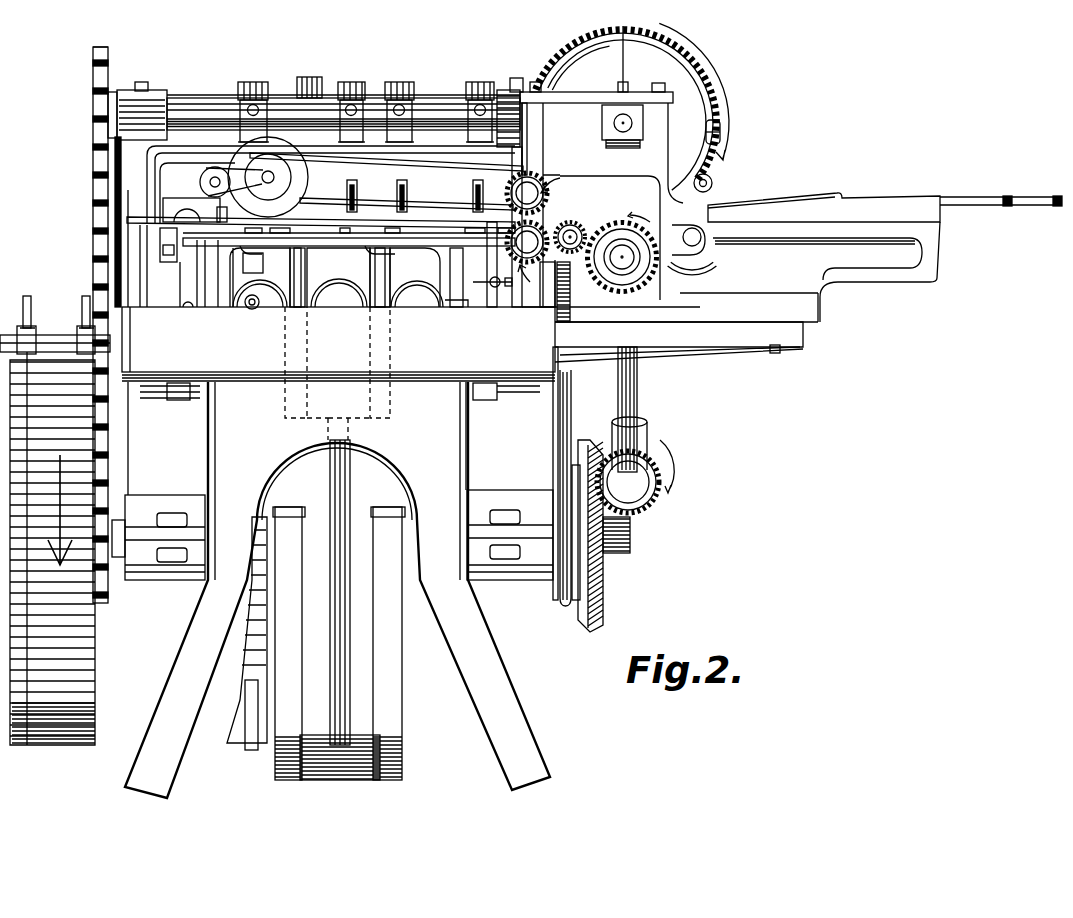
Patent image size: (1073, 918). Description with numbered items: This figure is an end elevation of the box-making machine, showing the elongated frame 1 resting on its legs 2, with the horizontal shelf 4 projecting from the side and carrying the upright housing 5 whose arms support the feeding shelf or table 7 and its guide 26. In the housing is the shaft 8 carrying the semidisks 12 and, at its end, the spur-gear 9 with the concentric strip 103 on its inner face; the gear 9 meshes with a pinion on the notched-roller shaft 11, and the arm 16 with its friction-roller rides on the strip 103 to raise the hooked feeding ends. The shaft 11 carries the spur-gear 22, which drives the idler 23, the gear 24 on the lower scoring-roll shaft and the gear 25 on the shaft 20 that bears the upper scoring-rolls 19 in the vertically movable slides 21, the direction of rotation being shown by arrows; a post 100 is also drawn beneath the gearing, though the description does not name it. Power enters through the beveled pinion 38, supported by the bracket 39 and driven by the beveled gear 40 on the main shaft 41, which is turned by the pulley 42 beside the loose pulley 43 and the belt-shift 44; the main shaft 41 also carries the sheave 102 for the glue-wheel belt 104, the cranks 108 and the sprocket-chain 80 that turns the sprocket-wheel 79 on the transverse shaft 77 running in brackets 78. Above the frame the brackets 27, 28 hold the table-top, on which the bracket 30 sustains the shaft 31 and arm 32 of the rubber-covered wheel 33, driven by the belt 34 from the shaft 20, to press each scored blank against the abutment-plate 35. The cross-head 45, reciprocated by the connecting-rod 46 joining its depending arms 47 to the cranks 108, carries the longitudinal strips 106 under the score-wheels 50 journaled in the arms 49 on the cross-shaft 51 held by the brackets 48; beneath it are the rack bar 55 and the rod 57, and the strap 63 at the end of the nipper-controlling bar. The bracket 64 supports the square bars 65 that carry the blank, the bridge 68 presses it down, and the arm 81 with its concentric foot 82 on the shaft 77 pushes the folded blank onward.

The frame 1 is at (338, 373).
The legs 2 is at (332, 590).
The shelf 4 is at (804, 338).
The housing 5 is at (664, 200).
The shelf or table 7 is at (885, 257).
The shaft 8 is at (602, 125).
The spur-gear 9 is at (722, 133).
The shaft 11 is at (622, 257).
The semidisks 12 is at (626, 108).
The arm 16 is at (713, 189).
The scoring-rolls 19 is at (527, 242).
The shaft 20 is at (527, 193).
The slides 21 is at (533, 139).
The spur-gear 22 is at (655, 272).
The idler 23 is at (585, 224).
The gear 24 is at (529, 282).
The gear 25 is at (558, 176).
The guide 26 is at (838, 194).
The bracket 27 is at (144, 222).
The bracket 28 is at (496, 290).
The bracket 30 is at (191, 210).
The shaft 31 is at (206, 190).
The arm 32 is at (263, 177).
The wheel 33 is at (268, 177).
The belt 34 is at (438, 165).
The abutment-plate 35 is at (228, 214).
The beveled pinion 38 is at (660, 492).
The bracket 39 is at (648, 428).
The beveled gear 40 is at (603, 608).
The main shaft 41 is at (631, 535).
The pulley 42 is at (95, 512).
The loose pulley 43 is at (55, 335).
The belt-shift 44 is at (82, 304).
The cross-head 45 is at (422, 277).
The connecting-rod 46 is at (346, 480).
The depending arms 47 is at (346, 277).
The brackets 48 is at (160, 97).
The arms 49 is at (366, 121).
The score-wheels 50 is at (347, 193).
The cross-shaft 51 is at (200, 112).
The bar 55 is at (260, 277).
The rod 57 is at (260, 294).
The strap or bracket 63 is at (168, 245).
The bracket 64 is at (199, 273).
The square bars 65 is at (295, 228).
The bridge 68 is at (331, 184).
The transverse shaft 77 is at (277, 96).
The brackets 78 is at (133, 78).
The sprocket-wheel 79 is at (109, 50).
The sprocket-chain 80 is at (93, 172).
The arm 81 is at (314, 77).
The concentric foot 82 is at (320, 163).
The post 100 is at (571, 294).
The sheave 102 is at (559, 598).
The concentric strip 103 is at (716, 103).
The belt 104 is at (558, 399).
The strips 106 is at (317, 251).
The cranks 108 is at (400, 711).